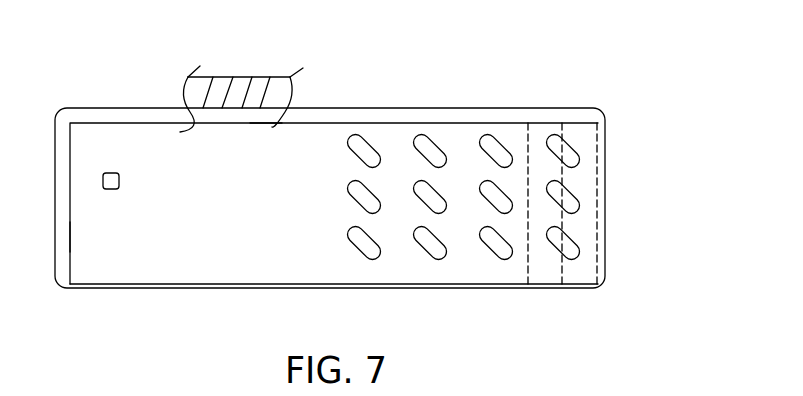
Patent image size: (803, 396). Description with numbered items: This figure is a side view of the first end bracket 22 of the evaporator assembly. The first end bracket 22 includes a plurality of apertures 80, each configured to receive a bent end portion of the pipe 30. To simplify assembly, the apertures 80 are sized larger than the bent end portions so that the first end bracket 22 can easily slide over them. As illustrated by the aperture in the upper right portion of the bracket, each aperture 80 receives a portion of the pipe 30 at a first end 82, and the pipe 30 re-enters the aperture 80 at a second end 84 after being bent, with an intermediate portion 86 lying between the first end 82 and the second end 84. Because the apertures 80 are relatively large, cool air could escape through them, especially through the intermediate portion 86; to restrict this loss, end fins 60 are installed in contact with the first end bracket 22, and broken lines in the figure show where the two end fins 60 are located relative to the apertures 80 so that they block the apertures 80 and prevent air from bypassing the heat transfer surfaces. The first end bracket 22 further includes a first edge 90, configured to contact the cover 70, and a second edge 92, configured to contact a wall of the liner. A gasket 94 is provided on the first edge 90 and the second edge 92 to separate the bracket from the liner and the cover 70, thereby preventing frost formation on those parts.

The first end bracket 22 is at (216, 262).
The pipe 30 is at (556, 138).
The end fins 60 is at (541, 268).
The cover 70 is at (247, 77).
The apertures 80 is at (345, 135).
The first end 82 is at (352, 146).
The second end 84 is at (365, 248).
The intermediate portion 86 is at (358, 195).
The first edge 90 is at (262, 128).
The second edge 92 is at (72, 237).
The gasket 94 is at (157, 105).